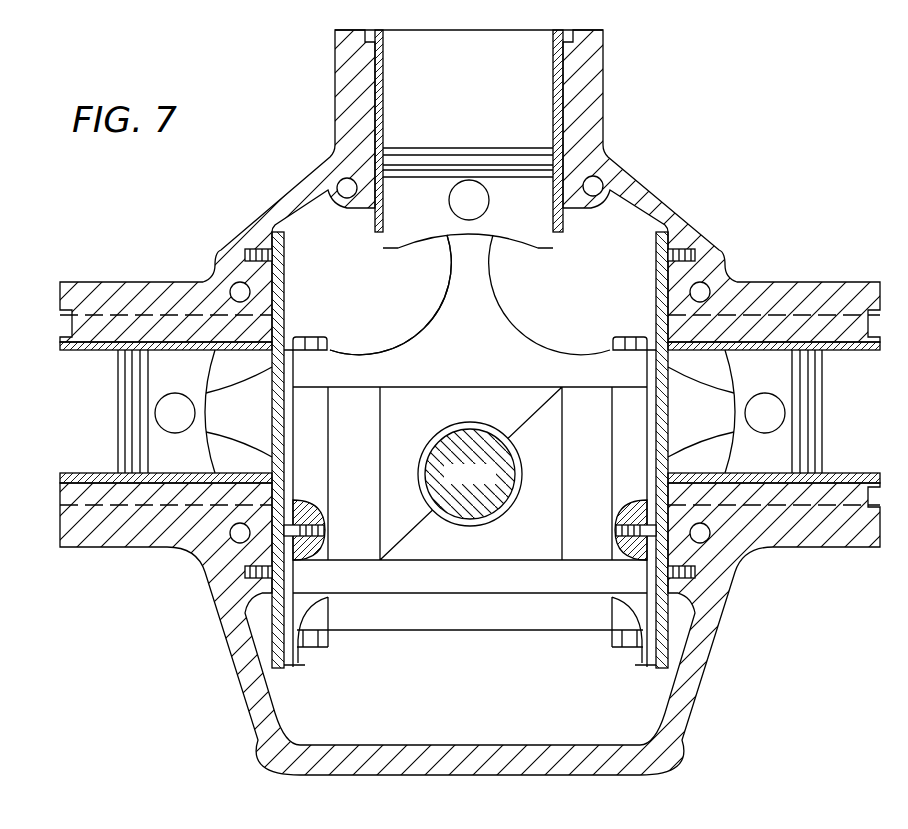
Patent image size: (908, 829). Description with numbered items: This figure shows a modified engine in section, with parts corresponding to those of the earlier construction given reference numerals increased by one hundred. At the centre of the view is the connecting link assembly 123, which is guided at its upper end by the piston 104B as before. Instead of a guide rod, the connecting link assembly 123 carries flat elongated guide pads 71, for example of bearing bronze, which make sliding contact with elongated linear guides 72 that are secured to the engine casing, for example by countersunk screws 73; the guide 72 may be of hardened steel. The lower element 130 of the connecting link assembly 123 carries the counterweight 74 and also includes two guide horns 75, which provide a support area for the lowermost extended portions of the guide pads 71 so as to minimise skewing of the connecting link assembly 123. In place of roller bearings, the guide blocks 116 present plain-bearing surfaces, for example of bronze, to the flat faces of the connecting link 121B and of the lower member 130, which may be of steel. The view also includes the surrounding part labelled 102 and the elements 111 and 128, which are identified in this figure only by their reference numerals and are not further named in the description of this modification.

The housing 102 is at (243, 673).
The piston 104B is at (525, 195).
The connecting link 121B is at (448, 290).
The connecting link assembly 123 is at (409, 316).
The elongated linear guide 72 is at (285, 268).
The countersunk screw 73 is at (656, 238).
The flat elongated guide pad 71 is at (653, 615).
The guide block 116 is at (407, 413).
The guide 128 is at (627, 418).
The crank pin 111 is at (470, 474).
The lower element 130 is at (462, 575).
The counterweight 74 is at (385, 610).
The guide horn 75 is at (302, 610).